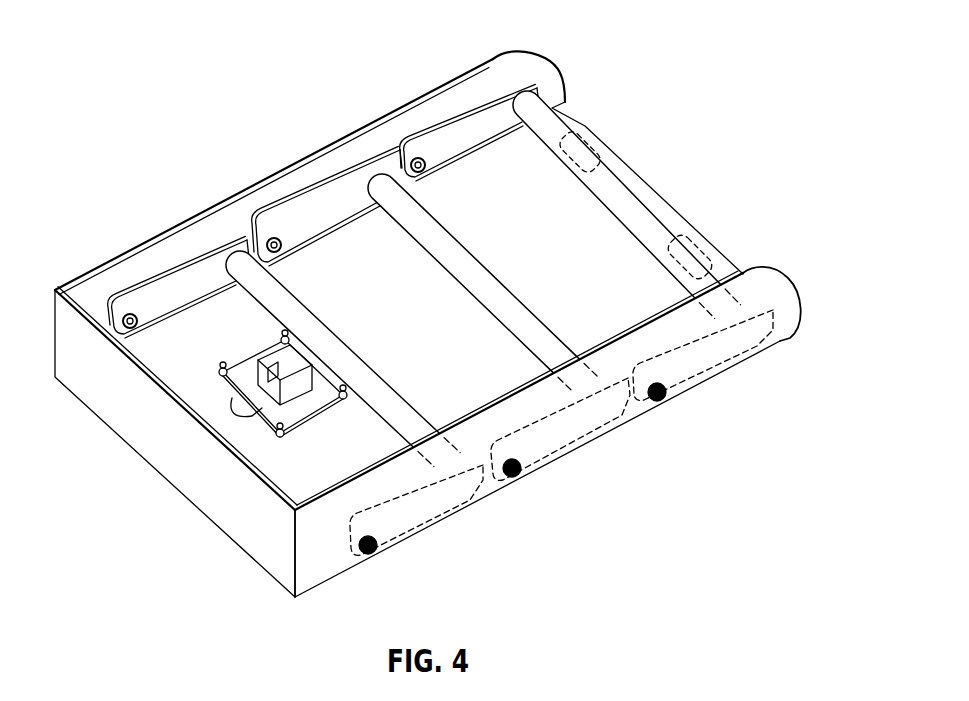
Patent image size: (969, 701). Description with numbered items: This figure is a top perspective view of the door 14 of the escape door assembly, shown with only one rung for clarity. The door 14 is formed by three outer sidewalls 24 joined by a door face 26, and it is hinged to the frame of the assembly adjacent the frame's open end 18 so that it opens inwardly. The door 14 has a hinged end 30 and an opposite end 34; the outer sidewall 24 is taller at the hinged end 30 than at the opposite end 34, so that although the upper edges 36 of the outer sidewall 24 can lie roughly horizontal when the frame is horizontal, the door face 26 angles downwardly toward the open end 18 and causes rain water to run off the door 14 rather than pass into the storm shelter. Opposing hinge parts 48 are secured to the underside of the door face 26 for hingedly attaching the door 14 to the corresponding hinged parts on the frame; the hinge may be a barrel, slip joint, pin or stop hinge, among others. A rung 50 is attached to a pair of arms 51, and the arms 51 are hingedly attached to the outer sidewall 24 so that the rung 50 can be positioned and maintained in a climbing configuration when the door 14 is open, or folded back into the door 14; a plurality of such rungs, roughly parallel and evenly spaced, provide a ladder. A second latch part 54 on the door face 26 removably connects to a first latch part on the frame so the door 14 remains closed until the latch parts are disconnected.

The door 14 is at (762, 124).
The open end 18 is at (642, 174).
The outer sidewall 24 is at (347, 150).
The door face 26 is at (200, 393).
The hinged end 30 is at (807, 312).
The opposite end 34 is at (295, 553).
The upper edges 36 is at (200, 222).
The hinge part 48 is at (597, 133).
The rung 50 is at (350, 363).
The arm 51 is at (160, 303).
The second latch part 54 is at (272, 358).